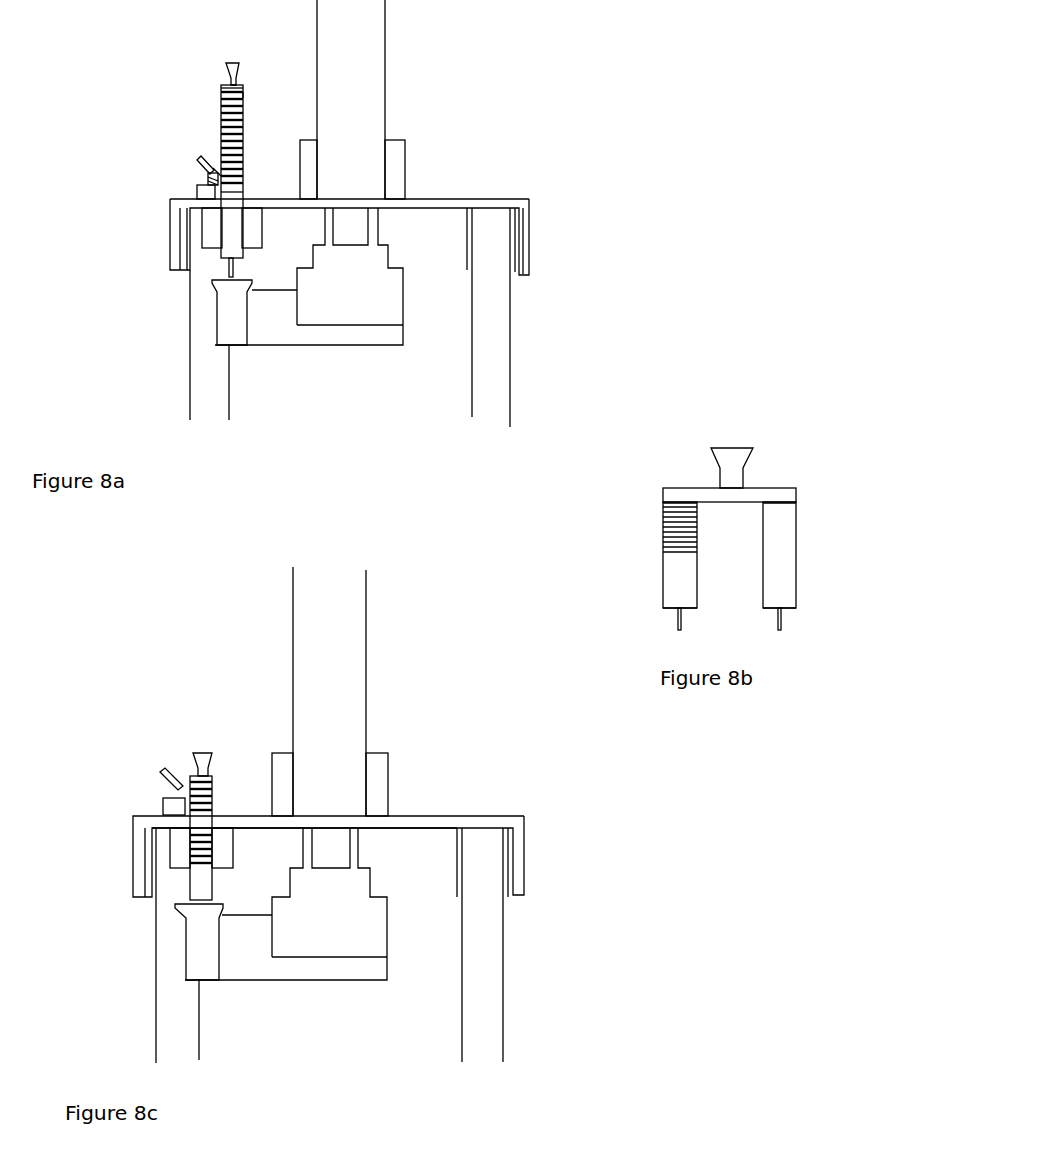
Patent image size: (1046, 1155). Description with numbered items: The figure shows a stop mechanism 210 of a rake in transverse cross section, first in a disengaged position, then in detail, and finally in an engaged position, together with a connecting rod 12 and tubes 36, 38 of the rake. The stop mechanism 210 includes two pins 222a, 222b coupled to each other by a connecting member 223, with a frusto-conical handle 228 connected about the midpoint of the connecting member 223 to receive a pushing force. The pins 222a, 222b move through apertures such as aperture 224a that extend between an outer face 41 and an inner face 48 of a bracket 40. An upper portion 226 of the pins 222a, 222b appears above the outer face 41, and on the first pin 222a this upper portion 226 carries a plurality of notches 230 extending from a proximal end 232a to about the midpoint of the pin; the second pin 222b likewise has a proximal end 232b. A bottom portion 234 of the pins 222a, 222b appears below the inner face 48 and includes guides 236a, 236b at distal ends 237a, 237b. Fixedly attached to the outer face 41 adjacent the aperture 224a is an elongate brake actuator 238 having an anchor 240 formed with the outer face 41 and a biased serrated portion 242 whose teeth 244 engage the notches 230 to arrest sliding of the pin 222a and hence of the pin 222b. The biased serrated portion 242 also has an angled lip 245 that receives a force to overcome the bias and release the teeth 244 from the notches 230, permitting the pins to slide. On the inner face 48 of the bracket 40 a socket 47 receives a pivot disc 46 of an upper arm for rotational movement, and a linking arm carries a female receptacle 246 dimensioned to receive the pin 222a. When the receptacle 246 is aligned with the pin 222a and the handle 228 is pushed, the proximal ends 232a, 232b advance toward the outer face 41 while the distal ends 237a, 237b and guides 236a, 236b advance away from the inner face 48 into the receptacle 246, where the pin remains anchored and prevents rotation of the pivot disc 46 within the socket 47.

In FIG. 8A, the stop mechanism 210 is at (66, 86).
In FIG. 8A, the connecting rod 12 is at (360, 100).
In FIG. 8C, the connecting rod 12 is at (345, 660).
In FIG. 8A, the outer face 41 is at (462, 198).
In FIG. 8A, the bracket 40 is at (530, 252).
In FIG. 8C, the bracket 40 is at (515, 824).
In FIG. 8A, the inner face 48 is at (420, 210).
In FIG. 8C, the socket 47 is at (365, 850).
In FIG. 8C, the pivot disc 46 is at (375, 928).
In FIG. 8A, the first tube 36 is at (203, 412).
In FIG. 8C, the first tube 36 is at (178, 1031).
In FIG. 8A, the second tube 38 is at (483, 408).
In FIG. 8C, the second tube 38 is at (483, 1028).
In FIG. 8A, the female receptacle 246 is at (212, 300).
In FIG. 8C, the female receptacle 246 is at (182, 963).
In FIG. 8A, the guide 236a is at (231, 279).
In FIG. 8B, the guide 236a is at (676, 627).
In FIG. 8B, the guide 236b is at (783, 625).
In FIG. 8A, the distal end 237a is at (232, 256).
In FIG. 8B, the distal end 237a is at (672, 612).
In FIG. 8B, the distal end 237b is at (790, 614).
In FIG. 8A, the bottom portion 234 is at (240, 228).
In FIG. 8A, the pin 222a is at (224, 110).
In FIG. 8B, the pin 222a is at (676, 582).
In FIG. 8C, the pin 222a is at (202, 885).
In FIG. 8B, the pin 222b is at (780, 548).
In FIG. 8A, the notches 230 is at (232, 121).
In FIG. 8B, the notches 230 is at (660, 525).
In FIG. 8C, the notches 230 is at (214, 797).
In FIG. 8A, the proximal end 232a is at (222, 95).
In FIG. 8B, the proximal end 232a is at (663, 505).
In FIG. 8B, the proximal end 232b is at (798, 504).
In FIG. 8A, the aperture 224a is at (268, 180).
In FIG. 8A, the frusto-conical handle 228 is at (229, 62).
In FIG. 8B, the frusto-conical handle 228 is at (735, 460).
In FIG. 8C, the frusto-conical handle 228 is at (200, 752).
In FIG. 8A, the connecting member 223 is at (243, 86).
In FIG. 8B, the connecting member 223 is at (757, 495).
In FIG. 8A, the upper portion 226 is at (246, 95).
In FIG. 8A, the anchor 240 is at (197, 196).
In FIG. 8A, the biased serrated portion 242 is at (208, 166).
In FIG. 8A, the brake actuator 238 is at (208, 180).
In FIG. 8A, the angled lip 245 is at (206, 166).
In FIG. 8C, the teeth 244 is at (182, 790).